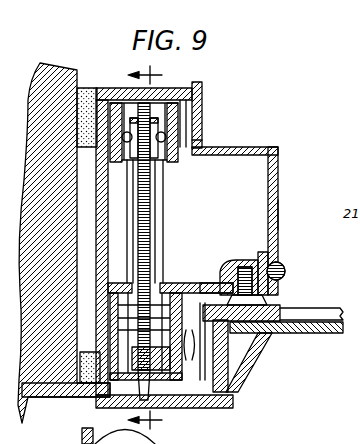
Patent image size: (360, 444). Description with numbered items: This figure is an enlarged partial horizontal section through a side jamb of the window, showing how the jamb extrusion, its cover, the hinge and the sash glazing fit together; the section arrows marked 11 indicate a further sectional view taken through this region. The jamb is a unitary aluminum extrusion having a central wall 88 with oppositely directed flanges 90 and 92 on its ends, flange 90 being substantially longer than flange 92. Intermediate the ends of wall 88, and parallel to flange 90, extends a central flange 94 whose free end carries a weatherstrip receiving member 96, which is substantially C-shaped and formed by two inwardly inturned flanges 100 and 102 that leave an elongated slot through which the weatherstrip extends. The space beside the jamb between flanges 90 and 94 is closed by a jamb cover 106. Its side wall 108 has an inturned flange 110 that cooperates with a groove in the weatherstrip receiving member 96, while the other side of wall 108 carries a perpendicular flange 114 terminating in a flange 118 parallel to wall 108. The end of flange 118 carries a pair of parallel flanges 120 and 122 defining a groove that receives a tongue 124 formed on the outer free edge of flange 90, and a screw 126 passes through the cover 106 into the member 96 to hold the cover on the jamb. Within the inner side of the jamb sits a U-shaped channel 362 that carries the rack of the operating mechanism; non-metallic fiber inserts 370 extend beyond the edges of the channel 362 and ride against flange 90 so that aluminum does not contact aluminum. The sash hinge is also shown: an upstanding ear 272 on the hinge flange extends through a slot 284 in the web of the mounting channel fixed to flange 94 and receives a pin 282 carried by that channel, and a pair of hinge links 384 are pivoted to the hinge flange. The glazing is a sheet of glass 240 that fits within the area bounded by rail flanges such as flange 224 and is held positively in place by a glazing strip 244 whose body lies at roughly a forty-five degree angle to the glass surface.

The central wall 88 is at (78, 226).
The flange 90 is at (128, 88).
The flange 92 is at (62, 398).
The central flange 94 is at (100, 280).
The section line 11 is at (157, 247).
The parallel flange 120 is at (205, 84).
The tongue 124 is at (205, 93).
The parallel flange 122 is at (204, 110).
The flange 118 is at (203, 134).
The flange 114 is at (250, 148).
The jamb cover 106 is at (279, 198).
The side wall 108 is at (280, 219).
The channel 362 is at (185, 162).
The hinge links 384 is at (158, 231).
The fiber inserts 370 is at (152, 188).
The upstanding ear 272 is at (158, 275).
The flange 224 is at (114, 335).
The weatherstrip receiving member 96 is at (255, 252).
The inturned flange 100 is at (220, 285).
The screw 126 is at (286, 268).
The inturned flange 110 is at (278, 290).
The inturned flange 102 is at (285, 307).
The sheet of glass 240 is at (300, 334).
The glazing strip 244 is at (257, 356).
The pin 282 is at (190, 412).
The slot 284 is at (110, 408).